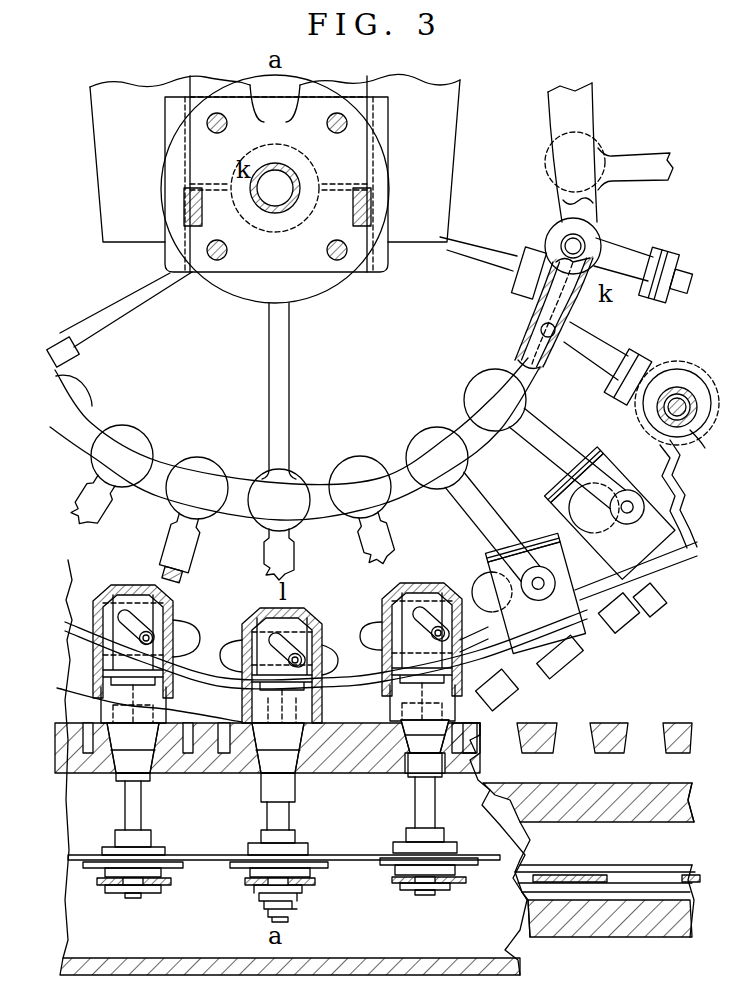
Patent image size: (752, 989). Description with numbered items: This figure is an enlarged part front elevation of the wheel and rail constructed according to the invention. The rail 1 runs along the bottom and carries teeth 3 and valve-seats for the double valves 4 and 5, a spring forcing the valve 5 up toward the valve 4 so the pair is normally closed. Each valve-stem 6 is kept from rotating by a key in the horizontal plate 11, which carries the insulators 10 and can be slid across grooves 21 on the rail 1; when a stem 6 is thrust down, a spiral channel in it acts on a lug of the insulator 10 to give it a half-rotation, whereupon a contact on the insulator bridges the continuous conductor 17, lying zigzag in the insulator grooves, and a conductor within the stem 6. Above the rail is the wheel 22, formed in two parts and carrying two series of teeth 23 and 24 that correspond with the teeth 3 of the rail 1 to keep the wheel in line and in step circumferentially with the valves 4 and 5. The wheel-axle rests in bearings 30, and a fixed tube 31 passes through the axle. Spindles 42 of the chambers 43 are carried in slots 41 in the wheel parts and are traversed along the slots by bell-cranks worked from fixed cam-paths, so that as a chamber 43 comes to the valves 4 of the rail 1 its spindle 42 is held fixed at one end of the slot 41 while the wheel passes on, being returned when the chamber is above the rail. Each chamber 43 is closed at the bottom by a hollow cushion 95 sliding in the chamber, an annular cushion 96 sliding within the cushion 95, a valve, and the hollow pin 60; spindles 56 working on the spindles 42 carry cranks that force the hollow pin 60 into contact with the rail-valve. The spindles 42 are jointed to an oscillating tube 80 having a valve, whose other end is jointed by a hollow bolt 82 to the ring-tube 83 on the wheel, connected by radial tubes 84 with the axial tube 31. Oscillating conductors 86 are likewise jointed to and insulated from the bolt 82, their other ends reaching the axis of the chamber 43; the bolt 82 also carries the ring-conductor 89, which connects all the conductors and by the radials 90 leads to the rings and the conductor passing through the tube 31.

The rail 1 is at (600, 778).
The base teeth blocks 3 is at (474, 730).
The valve 4 is at (150, 772).
The valve 5 is at (106, 760).
The valve-stem 6 is at (141, 804).
The insulator 10 is at (152, 836).
The horizontal plate 11 is at (170, 884).
The continuous conductor 17 is at (352, 862).
The grooves 21 is at (628, 872).
The wheel 22 is at (322, 666).
The teeth 23 is at (652, 602).
The teeth 24 is at (635, 628).
The bearing 30 is at (275, 188).
The tube 31 is at (275, 188).
The slots 41 is at (684, 362).
The spindles 42 is at (670, 438).
The chambers 43 is at (512, 622).
The spindles 56 is at (652, 420).
The hollow pin 60 is at (229, 785).
The oscillating tube 80 is at (652, 247).
The hollow bolt 82 is at (596, 240).
The ring-tube 83 is at (110, 400).
The radial tubes 84 is at (128, 305).
The oscillating conductors 86 is at (412, 436).
The ring-conductor 89 is at (298, 476).
The radials 90 is at (290, 368).
The cushion 95 is at (608, 648).
The annular cushion 96 is at (586, 672).